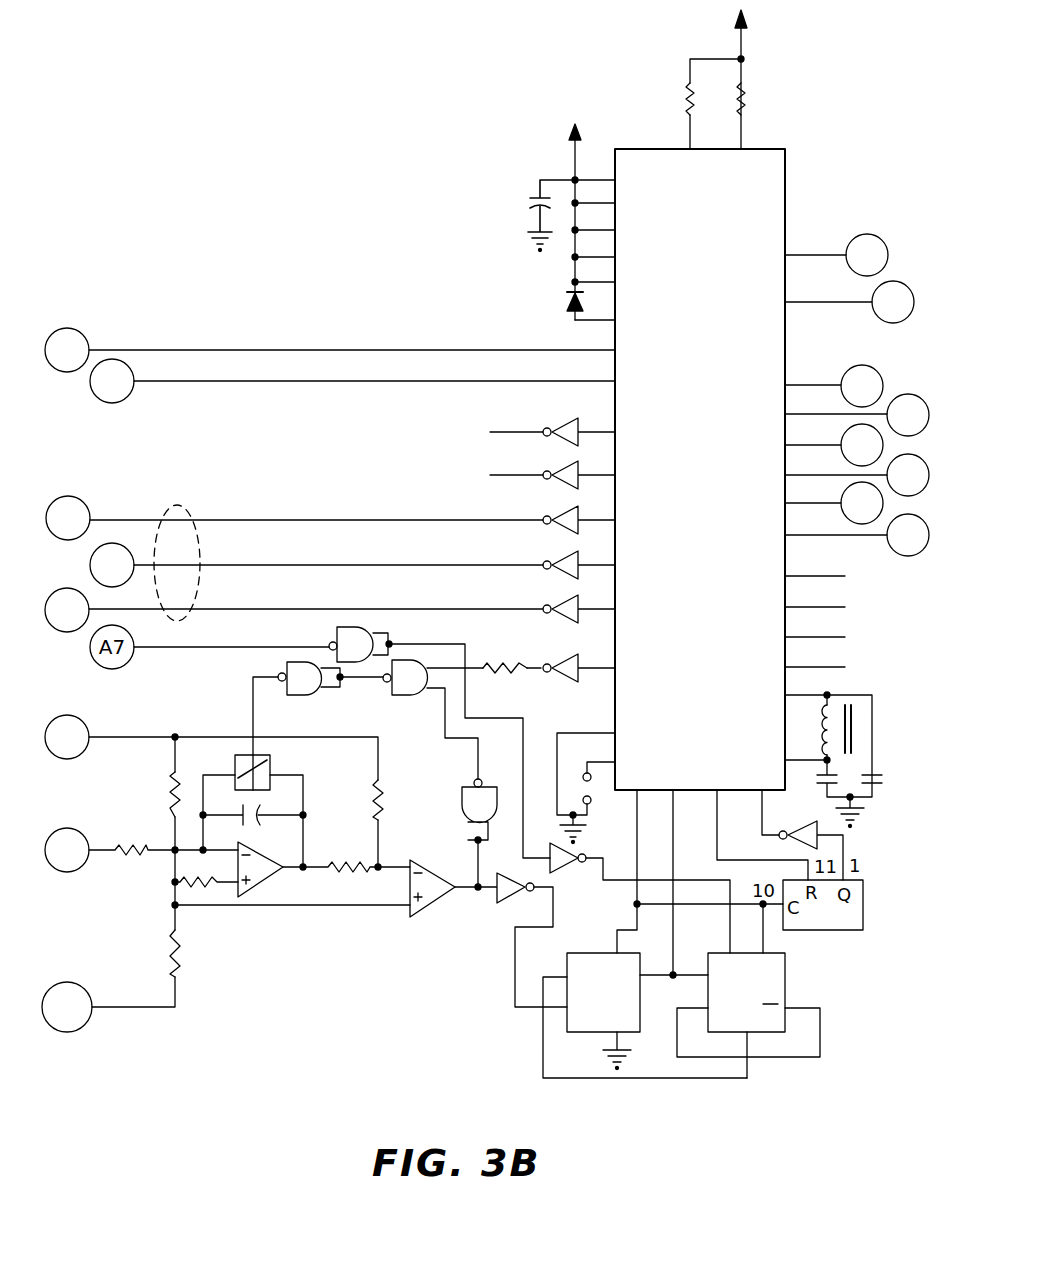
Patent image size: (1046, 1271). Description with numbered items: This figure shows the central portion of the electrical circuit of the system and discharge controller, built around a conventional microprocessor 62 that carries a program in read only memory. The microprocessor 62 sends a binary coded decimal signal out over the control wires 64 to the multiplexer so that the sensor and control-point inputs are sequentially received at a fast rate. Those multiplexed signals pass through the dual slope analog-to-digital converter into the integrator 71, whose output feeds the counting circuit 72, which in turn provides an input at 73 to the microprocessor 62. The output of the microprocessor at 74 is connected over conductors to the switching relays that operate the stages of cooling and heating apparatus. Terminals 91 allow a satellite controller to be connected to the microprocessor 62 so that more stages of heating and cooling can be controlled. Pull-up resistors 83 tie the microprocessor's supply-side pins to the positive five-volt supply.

The microprocessor 62 is at (716, 350).
The control wires 64 is at (196, 504).
The integrator 71 is at (354, 813).
The counting circuit 72 is at (668, 855).
The input to the microprocessor 73 is at (704, 820).
The output of the microprocessor 74 is at (768, 460).
The pull-up resistors 83 is at (760, 112).
The terminals 91 is at (855, 626).